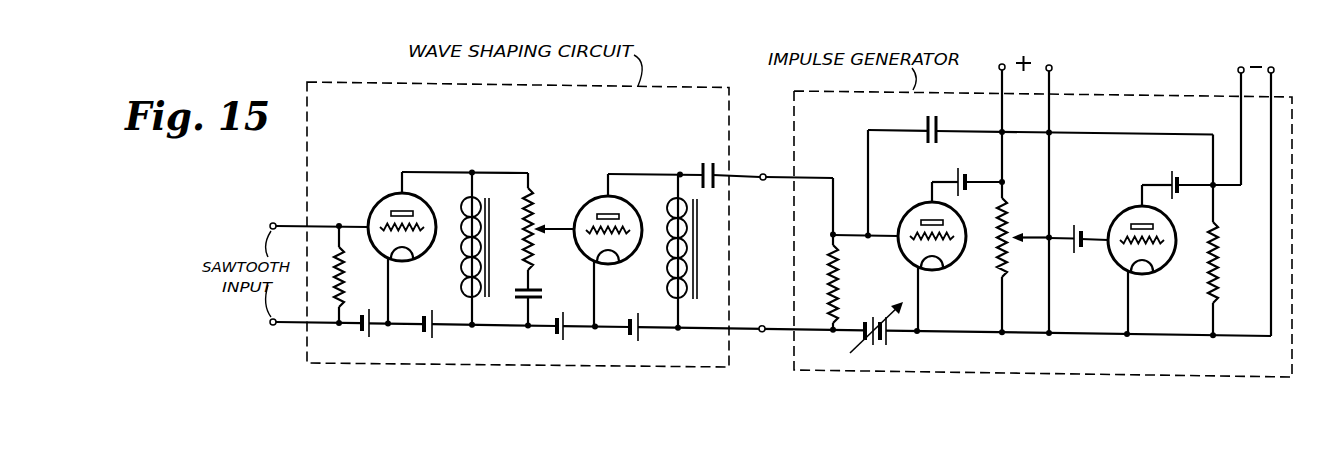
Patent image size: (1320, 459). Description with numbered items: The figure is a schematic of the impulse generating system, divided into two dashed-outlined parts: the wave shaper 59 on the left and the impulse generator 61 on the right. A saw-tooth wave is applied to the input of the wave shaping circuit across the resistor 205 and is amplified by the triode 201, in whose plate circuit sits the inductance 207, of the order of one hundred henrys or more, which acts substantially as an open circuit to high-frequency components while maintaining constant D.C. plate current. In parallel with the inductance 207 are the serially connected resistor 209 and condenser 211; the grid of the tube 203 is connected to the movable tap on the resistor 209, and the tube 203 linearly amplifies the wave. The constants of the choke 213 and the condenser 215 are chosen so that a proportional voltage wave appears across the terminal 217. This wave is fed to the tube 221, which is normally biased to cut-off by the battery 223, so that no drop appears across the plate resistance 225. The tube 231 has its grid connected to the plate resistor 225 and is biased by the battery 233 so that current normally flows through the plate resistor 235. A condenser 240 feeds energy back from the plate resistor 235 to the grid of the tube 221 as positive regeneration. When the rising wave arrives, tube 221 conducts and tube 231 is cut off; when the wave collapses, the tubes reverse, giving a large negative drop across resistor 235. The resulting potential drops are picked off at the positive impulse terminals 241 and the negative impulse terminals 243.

The wave shaper 59 is at (521, 369).
The impulse generator 61 is at (995, 377).
The triode 201 is at (383, 200).
The tube 203 is at (588, 203).
The resistor 205 is at (346, 278).
The inductance 207 is at (466, 264).
The resistor 209 is at (522, 203).
The condenser 211 is at (541, 291).
The choke 213 is at (666, 281).
The condenser 215 is at (710, 161).
The terminal 217 is at (763, 181).
The tube 221 is at (925, 203).
The battery 223 is at (879, 346).
The plate resistance 225 is at (998, 256).
The tube 231 is at (1130, 208).
The battery 233 is at (1076, 253).
The plate resistor 235 is at (1207, 262).
The condenser 240 is at (926, 128).
The positive impulse terminals 241 is at (1000, 71).
The negative impulse terminals 243 is at (1278, 55).